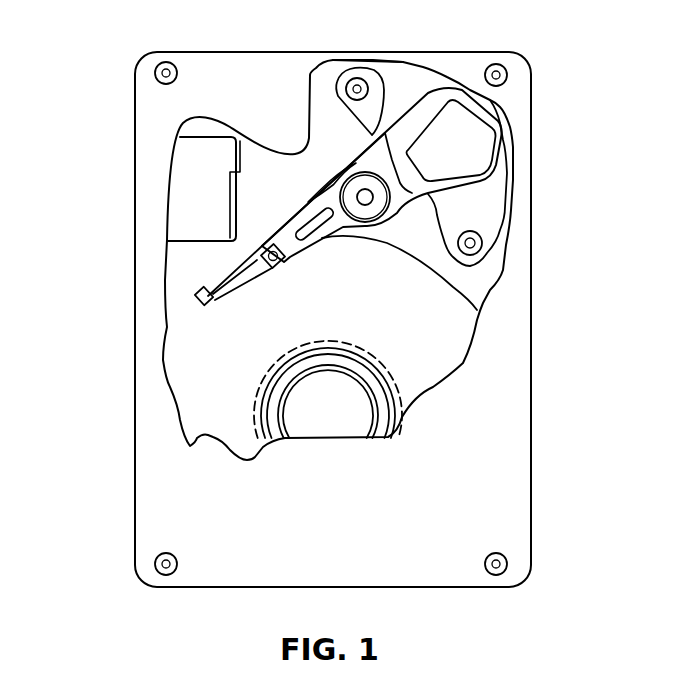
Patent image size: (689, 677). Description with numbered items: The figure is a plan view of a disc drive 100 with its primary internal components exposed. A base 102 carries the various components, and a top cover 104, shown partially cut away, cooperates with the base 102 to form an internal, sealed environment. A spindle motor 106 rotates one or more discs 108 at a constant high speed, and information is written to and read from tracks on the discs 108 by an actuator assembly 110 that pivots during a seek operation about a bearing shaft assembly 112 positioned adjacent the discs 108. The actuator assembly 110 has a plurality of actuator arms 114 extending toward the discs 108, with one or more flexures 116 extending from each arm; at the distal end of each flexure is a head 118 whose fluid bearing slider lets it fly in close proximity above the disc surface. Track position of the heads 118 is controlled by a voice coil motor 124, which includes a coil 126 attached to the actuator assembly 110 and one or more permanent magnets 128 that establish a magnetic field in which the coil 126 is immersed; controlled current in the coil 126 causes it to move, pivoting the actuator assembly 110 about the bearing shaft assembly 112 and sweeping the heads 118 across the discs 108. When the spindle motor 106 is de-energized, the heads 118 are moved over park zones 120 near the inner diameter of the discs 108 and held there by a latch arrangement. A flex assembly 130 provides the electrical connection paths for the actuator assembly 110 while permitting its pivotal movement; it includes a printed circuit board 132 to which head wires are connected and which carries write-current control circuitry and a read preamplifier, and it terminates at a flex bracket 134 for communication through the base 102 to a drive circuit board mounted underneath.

The disc drive 100 is at (118, 47).
The base 102 is at (177, 252).
The top cover 104 is at (175, 492).
The spindle motor 106 is at (327, 415).
The discs 108 is at (433, 363).
The actuator assembly 110 is at (343, 247).
The bearing shaft assembly 112 is at (368, 199).
The actuator arms 114 is at (318, 250).
The flexures 116 is at (225, 285).
The head 118 is at (195, 307).
The park zones 120 is at (253, 418).
The voice coil motor 124 is at (405, 61).
The coil 126 is at (495, 145).
The permanent magnets 128 is at (385, 107).
The flex assembly 130 is at (303, 200).
The printed circuit board 132 is at (343, 163).
The flex bracket 134 is at (193, 182).